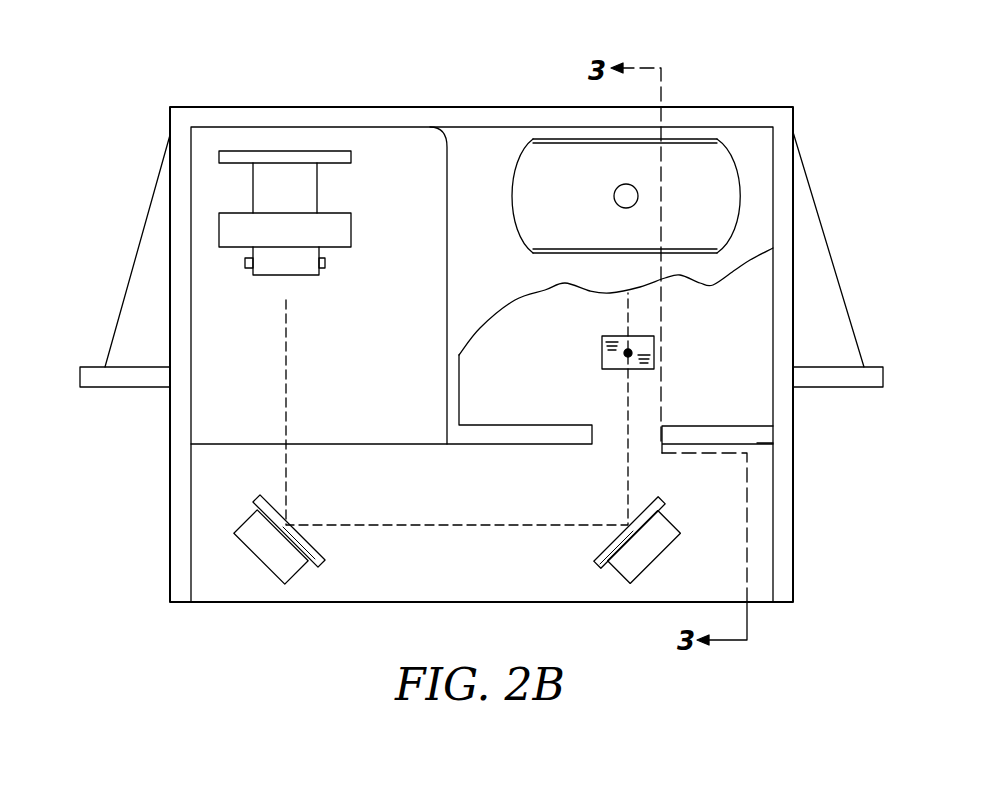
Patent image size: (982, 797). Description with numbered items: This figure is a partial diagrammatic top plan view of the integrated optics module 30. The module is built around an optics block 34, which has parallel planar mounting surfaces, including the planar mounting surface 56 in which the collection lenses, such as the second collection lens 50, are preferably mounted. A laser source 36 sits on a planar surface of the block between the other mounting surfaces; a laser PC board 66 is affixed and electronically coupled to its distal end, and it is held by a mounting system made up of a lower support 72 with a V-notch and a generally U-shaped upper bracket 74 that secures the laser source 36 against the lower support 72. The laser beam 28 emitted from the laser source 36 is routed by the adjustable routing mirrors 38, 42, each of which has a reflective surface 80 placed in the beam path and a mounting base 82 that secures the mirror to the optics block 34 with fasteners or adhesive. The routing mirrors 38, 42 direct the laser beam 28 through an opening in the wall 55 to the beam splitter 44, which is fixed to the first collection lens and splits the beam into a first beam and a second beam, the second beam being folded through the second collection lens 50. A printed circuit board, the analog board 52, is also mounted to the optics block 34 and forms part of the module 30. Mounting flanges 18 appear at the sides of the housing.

The mounting flange 18 is at (127, 387).
The laser beam 28 is at (289, 373).
The optics module 30 is at (723, 49).
The optics block 34 is at (540, 122).
The laser source 36 is at (300, 192).
The routing mirror 38 is at (295, 573).
The routing mirror 42 is at (617, 570).
The beam splitter 44 is at (602, 352).
The second collection lens 50 is at (697, 152).
The analog board 52 is at (747, 288).
The wall 55 is at (757, 443).
The planar mounting surface 56 is at (470, 145).
The laser PC board 66 is at (283, 151).
The lower support 72 is at (328, 265).
The upper bracket 74 is at (332, 230).
The reflective surface 80 is at (313, 548).
The mounting base 82 is at (270, 550).